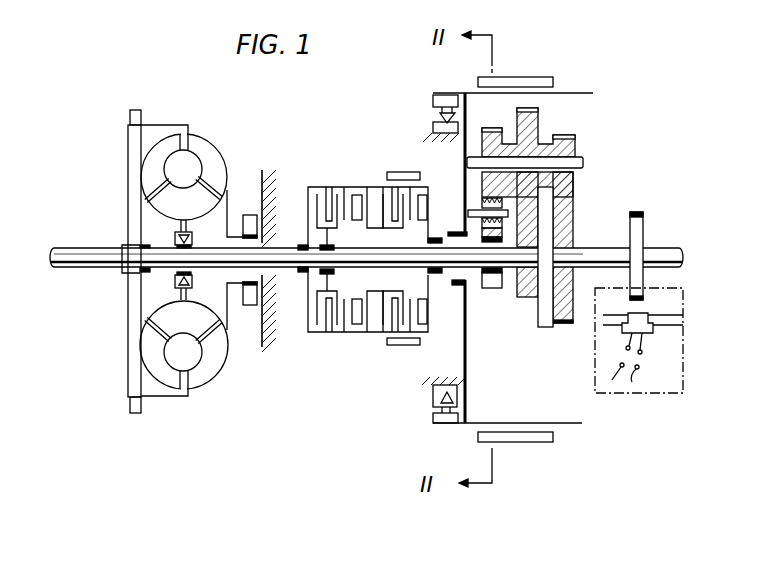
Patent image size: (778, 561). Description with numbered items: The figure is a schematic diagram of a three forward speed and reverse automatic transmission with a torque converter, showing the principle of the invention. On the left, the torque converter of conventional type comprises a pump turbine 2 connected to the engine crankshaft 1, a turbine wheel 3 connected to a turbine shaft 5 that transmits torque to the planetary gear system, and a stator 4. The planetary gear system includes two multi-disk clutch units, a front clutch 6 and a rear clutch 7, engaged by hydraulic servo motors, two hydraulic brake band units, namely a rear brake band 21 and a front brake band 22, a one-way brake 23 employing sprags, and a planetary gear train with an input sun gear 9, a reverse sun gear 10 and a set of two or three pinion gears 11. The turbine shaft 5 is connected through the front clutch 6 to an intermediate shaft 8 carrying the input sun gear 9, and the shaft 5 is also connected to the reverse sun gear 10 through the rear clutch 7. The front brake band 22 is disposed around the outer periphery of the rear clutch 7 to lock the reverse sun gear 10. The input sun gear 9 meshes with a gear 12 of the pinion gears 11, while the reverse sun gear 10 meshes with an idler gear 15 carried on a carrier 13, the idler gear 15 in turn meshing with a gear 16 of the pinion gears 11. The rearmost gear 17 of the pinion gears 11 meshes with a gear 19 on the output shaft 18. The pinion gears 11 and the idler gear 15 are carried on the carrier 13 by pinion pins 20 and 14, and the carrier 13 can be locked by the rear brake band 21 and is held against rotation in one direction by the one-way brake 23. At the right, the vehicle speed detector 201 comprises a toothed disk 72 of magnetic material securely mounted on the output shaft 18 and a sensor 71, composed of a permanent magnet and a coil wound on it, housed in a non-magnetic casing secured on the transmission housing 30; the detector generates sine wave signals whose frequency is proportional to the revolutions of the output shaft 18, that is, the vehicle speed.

The engine crankshaft 1 is at (95, 257).
The pump turbine 2 is at (202, 142).
The turbine wheel 3 is at (152, 167).
The stator 4 is at (168, 210).
The turbine shaft 5 is at (292, 270).
The front clutch 6 is at (332, 325).
The rear clutch 7 is at (385, 327).
The intermediate shaft 8 is at (447, 272).
The input sun gear 9 is at (527, 297).
The reverse sun gear 10 is at (492, 288).
The pinion gears 11 is at (544, 131).
The gear 12 is at (530, 117).
The carrier 13 is at (463, 150).
The pinion pin 14 is at (466, 213).
The idler gear 15 is at (482, 203).
The gear 16 is at (495, 132).
The rearmost gear 17 is at (577, 140).
The output shaft 18 is at (665, 250).
The gear 19 is at (575, 211).
The pinion pin 20 is at (583, 164).
The rear brake band 21 is at (533, 77).
The front brake band 22 is at (390, 175).
The one-way brake 23 is at (432, 127).
The transmission housing 30 is at (684, 316).
The sensor 71 is at (627, 322).
The toothed disk 72 is at (643, 275).
The vehicle speed detector 201 is at (627, 393).